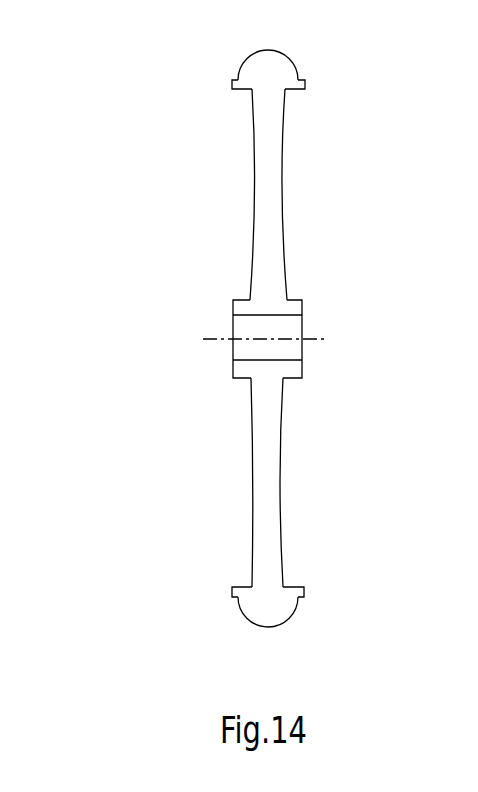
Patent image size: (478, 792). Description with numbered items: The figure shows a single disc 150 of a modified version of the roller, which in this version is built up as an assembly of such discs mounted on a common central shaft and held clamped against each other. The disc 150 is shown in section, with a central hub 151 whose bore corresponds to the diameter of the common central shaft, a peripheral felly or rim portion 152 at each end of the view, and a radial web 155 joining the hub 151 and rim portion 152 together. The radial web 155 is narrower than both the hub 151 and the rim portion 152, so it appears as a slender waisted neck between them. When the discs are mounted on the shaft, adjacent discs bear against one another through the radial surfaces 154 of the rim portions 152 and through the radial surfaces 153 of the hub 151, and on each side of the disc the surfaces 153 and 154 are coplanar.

The disc 150 is at (242, 348).
The central hub 151 is at (294, 378).
The rim portion 152 is at (272, 68).
The radial surfaces of the hub 153 is at (305, 311).
The radial surfaces of the rim portions 154 is at (232, 83).
The radial web 155 is at (267, 178).